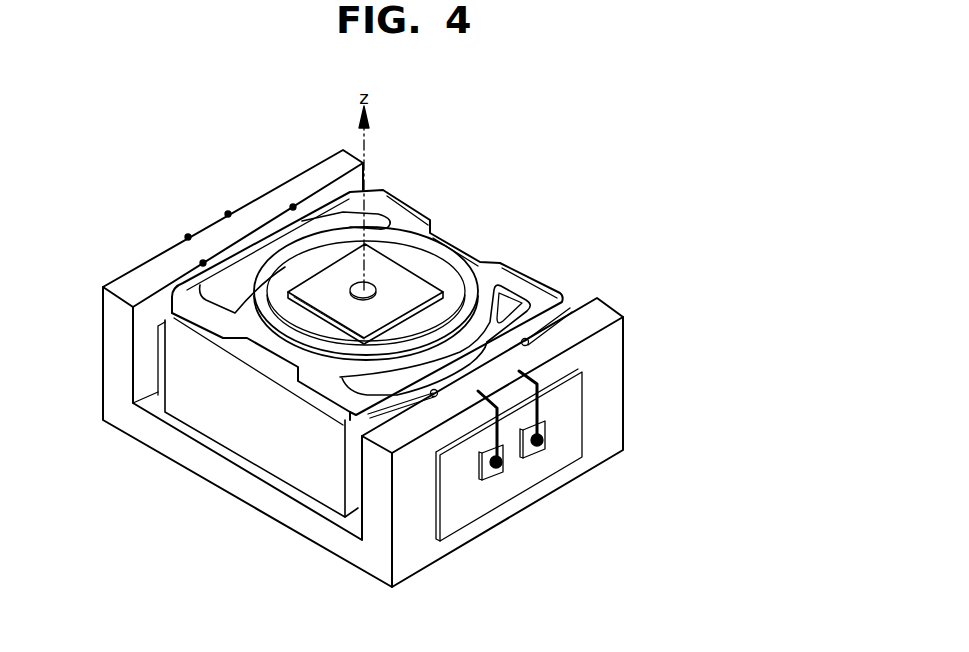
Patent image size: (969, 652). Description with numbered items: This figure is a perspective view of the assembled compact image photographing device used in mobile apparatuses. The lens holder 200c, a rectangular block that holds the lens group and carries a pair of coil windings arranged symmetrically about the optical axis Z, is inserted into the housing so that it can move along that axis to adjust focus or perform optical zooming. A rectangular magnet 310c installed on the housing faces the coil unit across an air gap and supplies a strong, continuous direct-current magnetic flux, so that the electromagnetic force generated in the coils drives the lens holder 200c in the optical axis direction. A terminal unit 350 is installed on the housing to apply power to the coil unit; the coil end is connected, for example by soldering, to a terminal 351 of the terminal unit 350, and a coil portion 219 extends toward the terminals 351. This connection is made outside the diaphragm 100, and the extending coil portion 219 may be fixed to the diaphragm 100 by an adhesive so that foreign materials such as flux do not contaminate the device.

The diaphragm 100 is at (605, 307).
The lens holder 200c is at (250, 440).
The magnet 310c is at (160, 358).
The coil portion 219 is at (541, 388).
The terminal 351 is at (546, 440).
The terminal unit 350 is at (530, 468).